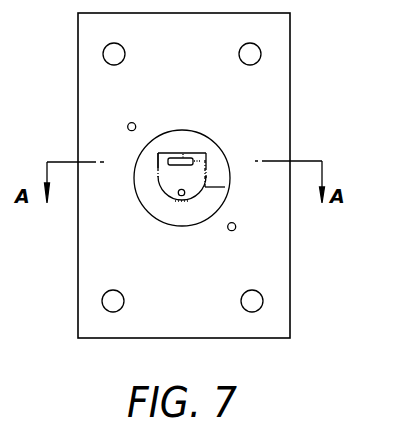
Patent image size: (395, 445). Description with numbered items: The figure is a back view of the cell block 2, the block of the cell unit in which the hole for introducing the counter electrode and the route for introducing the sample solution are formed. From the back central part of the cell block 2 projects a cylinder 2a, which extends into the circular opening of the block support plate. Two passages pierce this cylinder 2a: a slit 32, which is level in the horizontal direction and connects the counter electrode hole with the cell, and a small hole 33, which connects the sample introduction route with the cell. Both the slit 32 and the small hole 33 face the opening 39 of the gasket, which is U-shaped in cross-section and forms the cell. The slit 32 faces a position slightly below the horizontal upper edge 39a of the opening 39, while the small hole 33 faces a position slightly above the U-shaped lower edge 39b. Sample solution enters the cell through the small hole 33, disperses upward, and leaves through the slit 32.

The cell block 2 is at (267, 259).
The cylinder 2a is at (225, 155).
The slit 32 is at (193, 153).
The small hole 33 is at (185, 194).
The opening 39 is at (168, 196).
The horizontal upper edge 39a is at (167, 152).
The U-shaped lower edge 39b is at (227, 188).